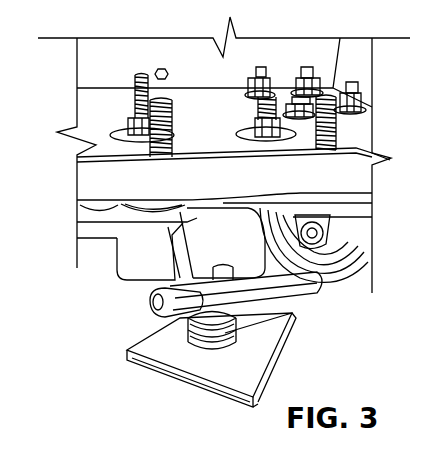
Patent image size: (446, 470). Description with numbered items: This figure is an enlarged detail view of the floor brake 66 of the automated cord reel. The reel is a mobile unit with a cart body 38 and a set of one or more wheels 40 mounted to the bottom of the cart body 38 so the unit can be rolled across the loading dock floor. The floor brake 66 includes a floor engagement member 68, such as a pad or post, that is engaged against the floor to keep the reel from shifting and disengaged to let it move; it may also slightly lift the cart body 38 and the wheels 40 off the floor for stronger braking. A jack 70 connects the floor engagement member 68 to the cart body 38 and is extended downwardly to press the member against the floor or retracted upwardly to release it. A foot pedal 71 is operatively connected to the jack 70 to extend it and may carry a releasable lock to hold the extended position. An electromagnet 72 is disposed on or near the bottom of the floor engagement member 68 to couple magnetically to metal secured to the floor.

The cart body 38 is at (92, 187).
The wheels 40 is at (363, 265).
The floor brake 66 is at (113, 359).
The floor engagement member 68 is at (283, 348).
The jack 70 is at (305, 300).
The foot pedal 71 is at (147, 318).
The electromagnet 72 is at (172, 382).